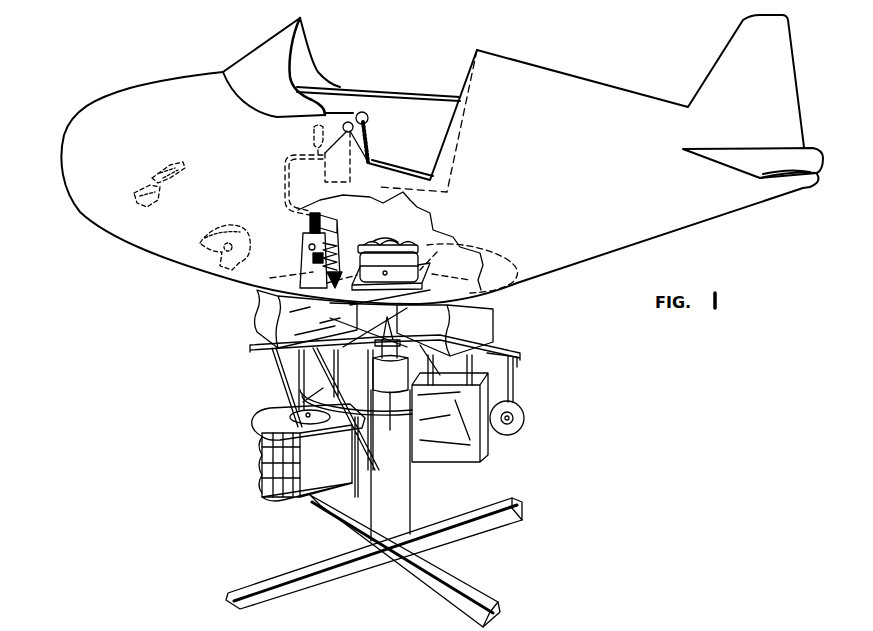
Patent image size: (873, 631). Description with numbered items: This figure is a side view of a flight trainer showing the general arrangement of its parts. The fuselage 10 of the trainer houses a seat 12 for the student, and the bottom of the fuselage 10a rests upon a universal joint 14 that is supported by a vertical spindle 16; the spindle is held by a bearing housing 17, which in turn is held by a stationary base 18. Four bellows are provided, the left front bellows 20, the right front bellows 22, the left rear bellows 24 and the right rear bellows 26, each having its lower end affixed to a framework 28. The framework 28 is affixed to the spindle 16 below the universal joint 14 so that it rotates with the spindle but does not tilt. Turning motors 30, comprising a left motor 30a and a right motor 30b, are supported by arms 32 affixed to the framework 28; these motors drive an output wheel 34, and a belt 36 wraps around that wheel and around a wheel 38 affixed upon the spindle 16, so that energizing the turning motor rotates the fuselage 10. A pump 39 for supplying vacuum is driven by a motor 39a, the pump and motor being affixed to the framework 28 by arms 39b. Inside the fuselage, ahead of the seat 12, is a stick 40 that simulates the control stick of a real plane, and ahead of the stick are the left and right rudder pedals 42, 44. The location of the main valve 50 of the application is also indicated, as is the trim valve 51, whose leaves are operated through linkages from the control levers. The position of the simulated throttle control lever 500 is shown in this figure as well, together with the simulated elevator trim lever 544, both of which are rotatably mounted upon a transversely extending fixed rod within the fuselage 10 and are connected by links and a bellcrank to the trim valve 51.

The fuselage 10 is at (545, 78).
The bottom of the fuselage 10a is at (500, 287).
The seat 12 is at (467, 107).
The universal joint 14 is at (398, 242).
The vertical spindle 16 is at (390, 343).
The bearing housing 17 is at (400, 480).
The stationary base 18 is at (430, 580).
The left front bellows 20 is at (263, 313).
The right front bellows 22 is at (348, 241).
The left rear bellows 24 is at (483, 322).
The right rear bellows 26 is at (458, 240).
The framework 28 is at (393, 323).
The turning motors 30 is at (253, 473).
The left motor 30a is at (310, 483).
The right motor 30b is at (262, 458).
The arms 32 is at (302, 373).
The output wheel 34 is at (300, 418).
The belt 36 is at (363, 405).
The wheel 38 is at (396, 393).
The pump 39 is at (485, 443).
The motor 39a is at (527, 417).
The arms 39b is at (390, 374).
The stick 40 is at (313, 132).
The left rudder pedal 42 is at (160, 197).
The right rudder pedal 44 is at (185, 169).
The main valve 50 is at (318, 260).
The trim valve 51 is at (198, 242).
The simulated throttle control lever 500 is at (368, 130).
The simulated elevator trim lever 544 is at (337, 165).